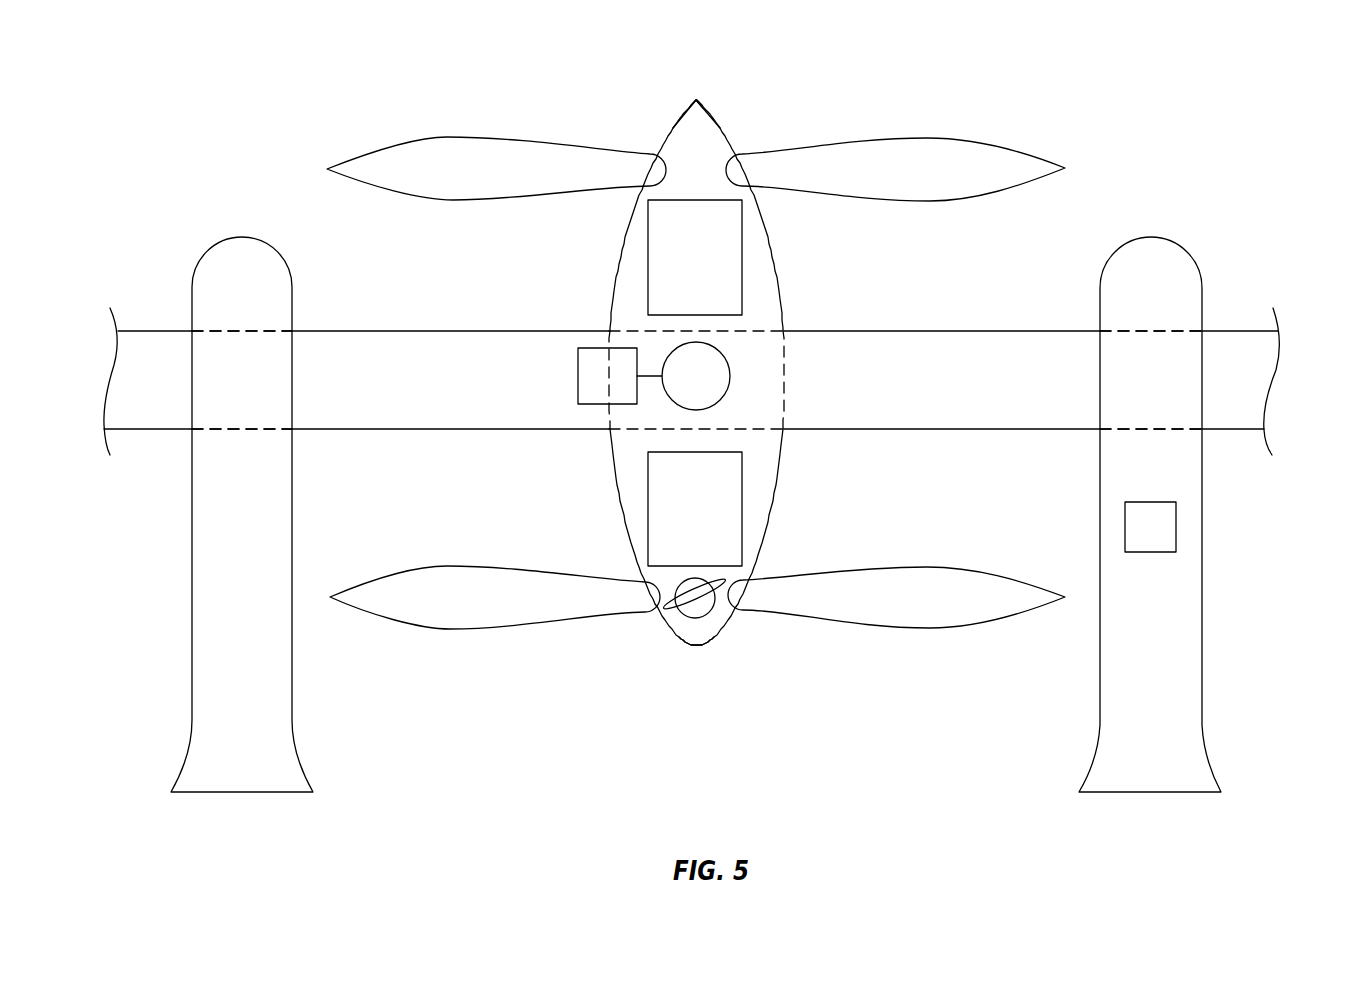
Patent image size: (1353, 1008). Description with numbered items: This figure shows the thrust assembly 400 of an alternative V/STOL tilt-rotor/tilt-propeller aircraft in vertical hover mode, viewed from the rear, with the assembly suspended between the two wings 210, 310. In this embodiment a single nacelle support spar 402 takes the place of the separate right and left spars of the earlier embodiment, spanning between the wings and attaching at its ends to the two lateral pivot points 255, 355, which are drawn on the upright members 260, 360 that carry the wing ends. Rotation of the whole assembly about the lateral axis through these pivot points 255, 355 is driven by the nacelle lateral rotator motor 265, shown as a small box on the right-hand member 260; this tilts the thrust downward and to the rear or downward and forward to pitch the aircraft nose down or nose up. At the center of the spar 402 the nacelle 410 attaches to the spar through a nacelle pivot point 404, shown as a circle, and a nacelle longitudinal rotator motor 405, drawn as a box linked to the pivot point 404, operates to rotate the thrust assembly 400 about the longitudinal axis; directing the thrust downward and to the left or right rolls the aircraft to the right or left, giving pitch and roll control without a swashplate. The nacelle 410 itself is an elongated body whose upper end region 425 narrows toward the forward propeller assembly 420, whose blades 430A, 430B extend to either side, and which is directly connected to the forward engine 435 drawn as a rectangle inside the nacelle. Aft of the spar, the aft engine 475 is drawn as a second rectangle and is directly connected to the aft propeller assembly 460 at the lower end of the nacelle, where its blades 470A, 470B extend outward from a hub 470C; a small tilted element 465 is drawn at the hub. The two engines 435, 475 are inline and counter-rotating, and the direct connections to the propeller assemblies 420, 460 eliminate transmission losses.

The thrust assembly 400 is at (185, 72).
The nacelle support spar 402 is at (946, 352).
The nacelle pivot point 404 is at (732, 375).
The nacelle longitudinal rotator motor 405 is at (578, 375).
The nacelle 410 is at (777, 262).
The forward propeller assembly 420 is at (700, 99).
The upper nacelle portion 425 is at (680, 135).
The upper rotor blade 430A is at (962, 138).
The upper rotor blade 430B is at (433, 137).
The forward engine 435 is at (648, 242).
The aft engine 475 is at (648, 535).
The lower rotor blade 470A is at (447, 566).
The lower rotor blade 470B is at (947, 567).
The rotor hub 470C is at (730, 622).
The blade pivot 465 is at (670, 620).
The aft propeller assembly 460 is at (697, 645).
The wing 310 is at (172, 330).
The wing 210 is at (1232, 330).
The lateral pivot point 355 is at (278, 398).
The lateral pivot point 255 is at (1115, 413).
The left pylon 360 is at (190, 630).
The right pylon 260 is at (1203, 665).
The nacelle lateral rotator motor 265 is at (1178, 537).